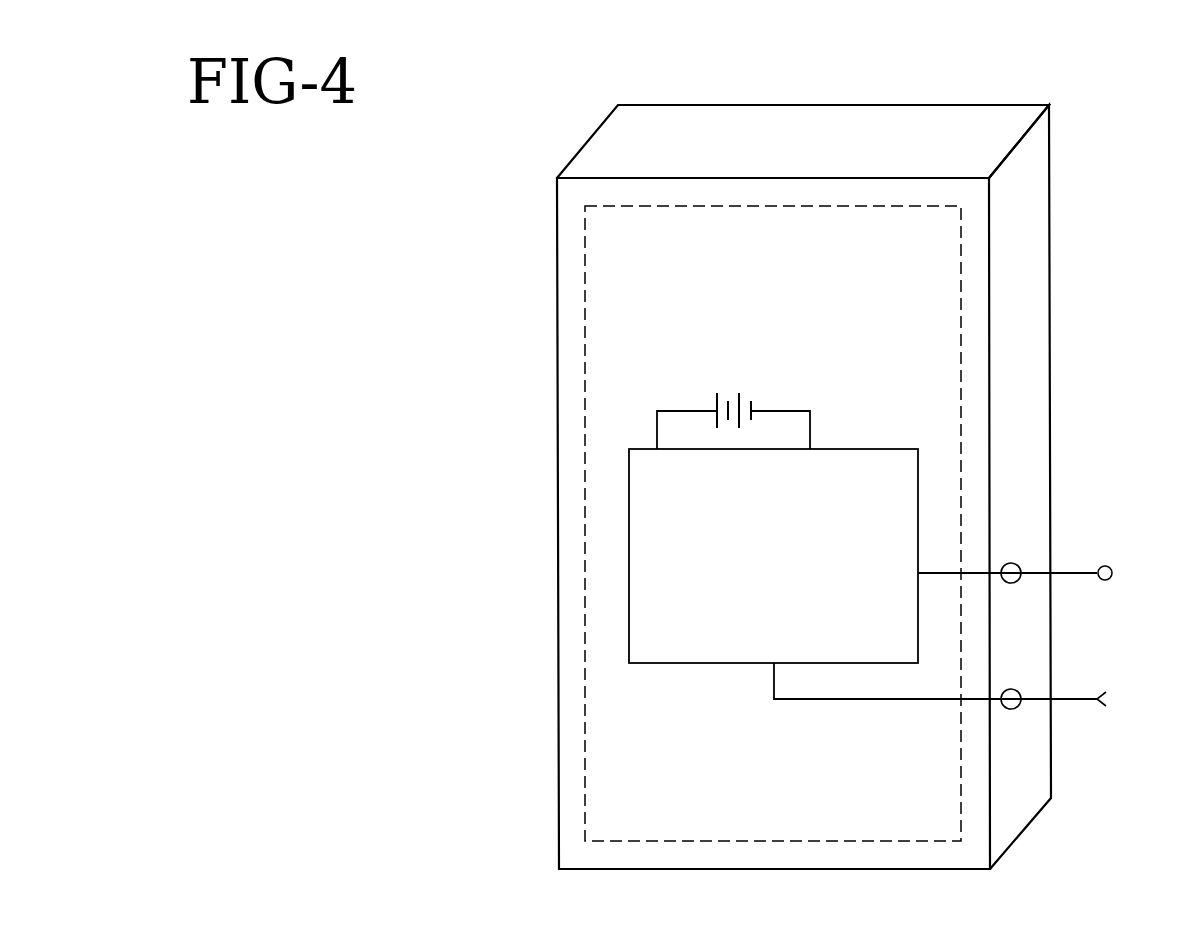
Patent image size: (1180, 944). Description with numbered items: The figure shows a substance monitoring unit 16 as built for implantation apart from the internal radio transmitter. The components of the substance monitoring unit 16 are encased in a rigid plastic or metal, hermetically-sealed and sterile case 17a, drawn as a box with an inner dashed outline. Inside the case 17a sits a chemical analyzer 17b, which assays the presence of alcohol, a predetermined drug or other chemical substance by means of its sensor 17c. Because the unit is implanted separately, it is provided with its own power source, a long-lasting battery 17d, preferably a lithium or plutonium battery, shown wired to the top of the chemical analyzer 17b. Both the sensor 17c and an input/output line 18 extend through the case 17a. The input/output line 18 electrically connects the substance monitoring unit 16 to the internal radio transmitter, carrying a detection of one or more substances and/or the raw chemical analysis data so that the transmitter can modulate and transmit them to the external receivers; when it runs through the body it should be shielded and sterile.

The substance monitoring unit 16 is at (992, 129).
The case 17a is at (1053, 737).
The chemical analyzer 17b is at (638, 609).
The sensor 17c is at (1070, 573).
The long-lasting battery 17d is at (715, 400).
The input/output line 18 is at (1085, 699).